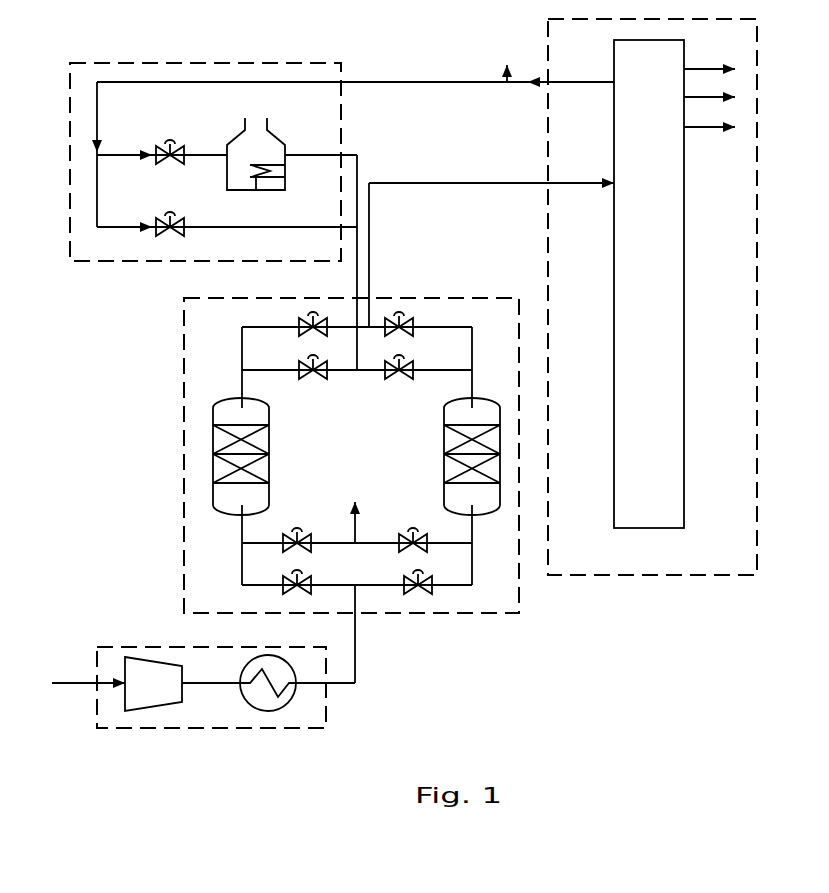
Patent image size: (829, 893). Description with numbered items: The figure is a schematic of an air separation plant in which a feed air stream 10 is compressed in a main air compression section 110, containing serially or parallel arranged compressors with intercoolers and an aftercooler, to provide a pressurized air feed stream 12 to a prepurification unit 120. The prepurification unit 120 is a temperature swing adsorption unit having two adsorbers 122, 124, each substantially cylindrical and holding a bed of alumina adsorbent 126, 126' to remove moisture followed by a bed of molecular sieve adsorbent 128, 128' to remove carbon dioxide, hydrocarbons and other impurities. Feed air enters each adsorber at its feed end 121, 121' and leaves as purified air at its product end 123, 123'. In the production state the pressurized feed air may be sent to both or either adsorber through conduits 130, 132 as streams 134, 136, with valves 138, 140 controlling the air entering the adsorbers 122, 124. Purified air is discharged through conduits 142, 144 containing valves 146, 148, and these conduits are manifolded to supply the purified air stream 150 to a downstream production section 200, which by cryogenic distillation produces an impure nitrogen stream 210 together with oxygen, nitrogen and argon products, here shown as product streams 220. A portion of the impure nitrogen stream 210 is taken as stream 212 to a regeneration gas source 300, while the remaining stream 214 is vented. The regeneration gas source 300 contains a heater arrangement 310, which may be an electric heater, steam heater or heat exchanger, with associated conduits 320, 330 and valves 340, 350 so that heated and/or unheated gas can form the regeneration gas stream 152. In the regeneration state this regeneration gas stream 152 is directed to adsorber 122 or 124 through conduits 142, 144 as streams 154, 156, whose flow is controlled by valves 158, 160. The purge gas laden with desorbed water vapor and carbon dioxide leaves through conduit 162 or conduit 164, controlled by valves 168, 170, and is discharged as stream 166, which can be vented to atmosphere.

The feed air stream 10 is at (88, 673).
The pressurized air feed stream 12 is at (357, 668).
The main air compression section 110 is at (338, 714).
The prepurification unit 120 is at (181, 456).
The feed end 121 is at (221, 525).
The feed end 121' is at (499, 525).
The adsorber 122 is at (270, 418).
The product end 123 is at (220, 385).
The product end 123' is at (498, 385).
The adsorber 124 is at (440, 413).
The bed of alumina adsorbent 126 is at (272, 467).
The bed of alumina adsorbent 126' is at (444, 467).
The bed of molecular sieve adsorbent 128 is at (272, 439).
The bed of molecular sieve adsorbent 128' is at (444, 439).
The conduit 130 is at (252, 584).
The conduit 132 is at (473, 568).
The stream 134 is at (333, 584).
The stream 136 is at (383, 582).
The valve 138 is at (303, 579).
The valve 140 is at (429, 581).
The conduit 142 is at (262, 325).
The conduit 144 is at (461, 326).
The valve 146 is at (326, 320).
The valve 148 is at (414, 319).
The purified air stream 150 is at (491, 242).
The regeneration gas stream 152 is at (360, 349).
The stream 154 is at (269, 372).
The stream 156 is at (421, 367).
The valve 158 is at (299, 362).
The valve 160 is at (393, 375).
The conduit 162 is at (251, 542).
The conduit 164 is at (443, 539).
The stream 166 is at (363, 509).
The valve 168 is at (312, 537).
The valve 170 is at (402, 537).
The downstream production section 200 is at (757, 45).
The impure nitrogen stream 210 is at (581, 69).
The stream 212 is at (320, 142).
The stream 214 is at (514, 60).
The product streams 220 is at (710, 85).
The regeneration gas source 300 is at (204, 63).
The heater arrangement 310 is at (276, 131).
The conduit 320 is at (125, 154).
The conduit 330 is at (99, 203).
The valve 340 is at (181, 148).
The valve 350 is at (184, 222).